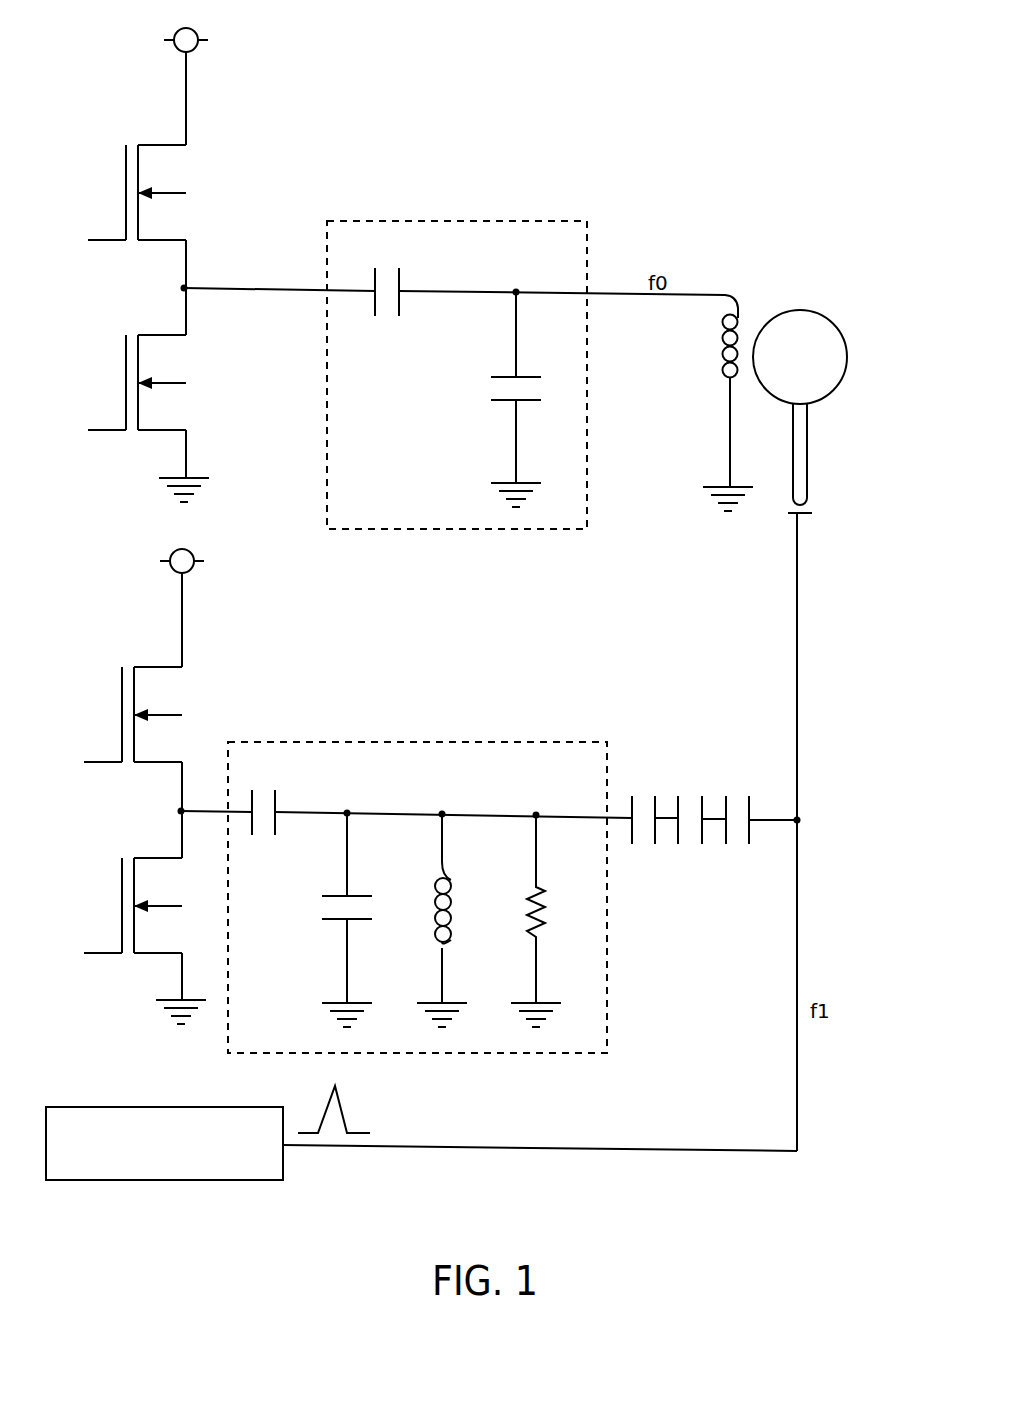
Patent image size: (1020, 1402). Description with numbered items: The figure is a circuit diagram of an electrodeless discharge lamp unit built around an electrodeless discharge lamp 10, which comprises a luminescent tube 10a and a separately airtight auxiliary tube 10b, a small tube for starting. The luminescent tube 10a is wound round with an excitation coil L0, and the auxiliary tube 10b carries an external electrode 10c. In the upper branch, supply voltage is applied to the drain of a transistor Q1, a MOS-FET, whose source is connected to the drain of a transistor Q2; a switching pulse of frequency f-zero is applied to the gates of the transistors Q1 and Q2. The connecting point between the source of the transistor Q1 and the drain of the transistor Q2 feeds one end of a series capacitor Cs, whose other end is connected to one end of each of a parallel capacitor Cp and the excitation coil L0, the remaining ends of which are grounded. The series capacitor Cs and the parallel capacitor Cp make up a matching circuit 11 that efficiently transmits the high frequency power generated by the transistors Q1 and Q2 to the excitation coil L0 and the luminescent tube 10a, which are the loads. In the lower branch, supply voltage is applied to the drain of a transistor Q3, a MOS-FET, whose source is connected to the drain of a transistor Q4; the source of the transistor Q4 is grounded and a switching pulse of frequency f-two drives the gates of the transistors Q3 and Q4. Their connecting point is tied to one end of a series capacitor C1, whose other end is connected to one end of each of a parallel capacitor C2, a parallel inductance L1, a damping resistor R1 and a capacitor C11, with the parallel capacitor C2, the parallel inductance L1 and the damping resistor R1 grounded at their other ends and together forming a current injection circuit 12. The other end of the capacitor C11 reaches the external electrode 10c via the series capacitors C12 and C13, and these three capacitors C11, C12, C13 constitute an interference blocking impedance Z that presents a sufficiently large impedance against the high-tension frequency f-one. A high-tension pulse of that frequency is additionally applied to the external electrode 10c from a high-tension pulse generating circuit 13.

The electrodeless discharge lamp 10 is at (829, 707).
The luminescent tube 10a is at (847, 356).
The auxiliary tube 10b is at (808, 450).
The external electrode 10c is at (812, 513).
The matching circuit 11 is at (457, 351).
The current injection circuit 12 is at (417, 873).
The high-tension pulse generating circuit 13 is at (172, 1182).
The transistor Q1 is at (136, 192).
The transistor Q2 is at (136, 382).
The transistor Q3 is at (132, 714).
The transistor Q4 is at (132, 905).
The series capacitor Cs is at (392, 275).
The parallel capacitor Cp is at (498, 387).
The series capacitor C1 is at (265, 799).
The parallel capacitor C2 is at (329, 908).
The excitation coil L0 is at (710, 400).
The parallel inductance L1 is at (422, 908).
The damping resistor R1 is at (517, 909).
The capacitor C11 is at (641, 792).
The series capacitor C12 is at (690, 794).
The series capacitor C13 is at (738, 792).
The interference blocking impedance Z is at (709, 825).